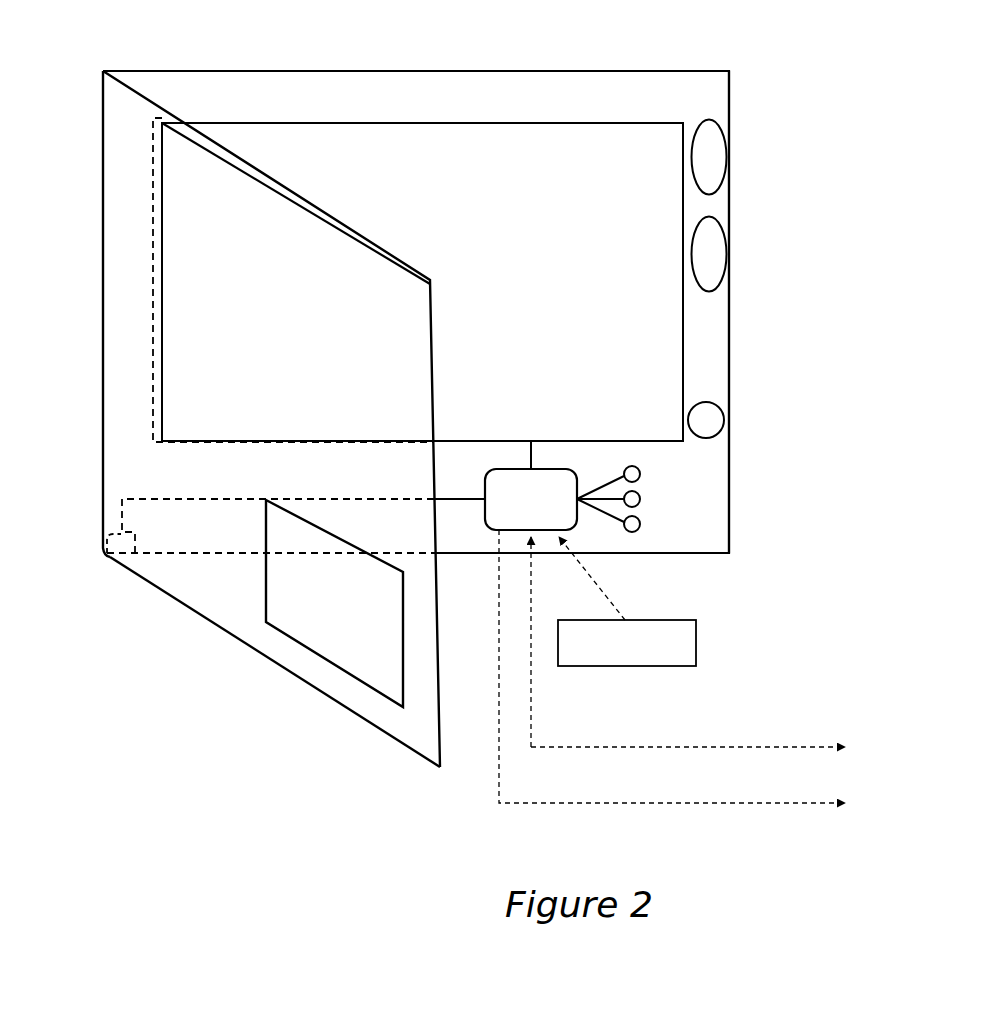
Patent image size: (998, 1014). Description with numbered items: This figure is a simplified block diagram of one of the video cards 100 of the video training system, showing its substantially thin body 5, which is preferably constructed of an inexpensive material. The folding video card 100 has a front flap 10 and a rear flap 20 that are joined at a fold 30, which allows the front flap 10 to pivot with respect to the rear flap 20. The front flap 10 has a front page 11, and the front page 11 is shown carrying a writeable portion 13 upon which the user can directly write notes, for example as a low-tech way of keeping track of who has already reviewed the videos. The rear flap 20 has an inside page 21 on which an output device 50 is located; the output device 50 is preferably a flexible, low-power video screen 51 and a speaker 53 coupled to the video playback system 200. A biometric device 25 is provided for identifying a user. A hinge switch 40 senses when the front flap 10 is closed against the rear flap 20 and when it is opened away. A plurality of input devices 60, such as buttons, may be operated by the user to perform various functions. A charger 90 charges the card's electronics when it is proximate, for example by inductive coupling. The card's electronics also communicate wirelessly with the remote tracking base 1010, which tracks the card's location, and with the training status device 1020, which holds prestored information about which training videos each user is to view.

The video card 100 is at (753, 52).
The body 5 is at (416, 312).
The fold 30 is at (86, 314).
The rear flap 20 is at (744, 311).
The inside page 21 is at (422, 264).
The video screen 51 is at (422, 282).
The biometric device 25 is at (727, 166).
The output device 50 is at (662, 353).
The speaker 53 is at (695, 413).
The front page 11 is at (271, 419).
The front flap 10 is at (204, 641).
The writeable portion 13 is at (334, 603).
The hinge switch 40 is at (296, 510).
The video playback system 200 is at (504, 450).
The input devices 60 is at (652, 499).
The charger 90 is at (627, 601).
The training status device 1020 is at (688, 642).
The tracking base 1010 is at (672, 666).